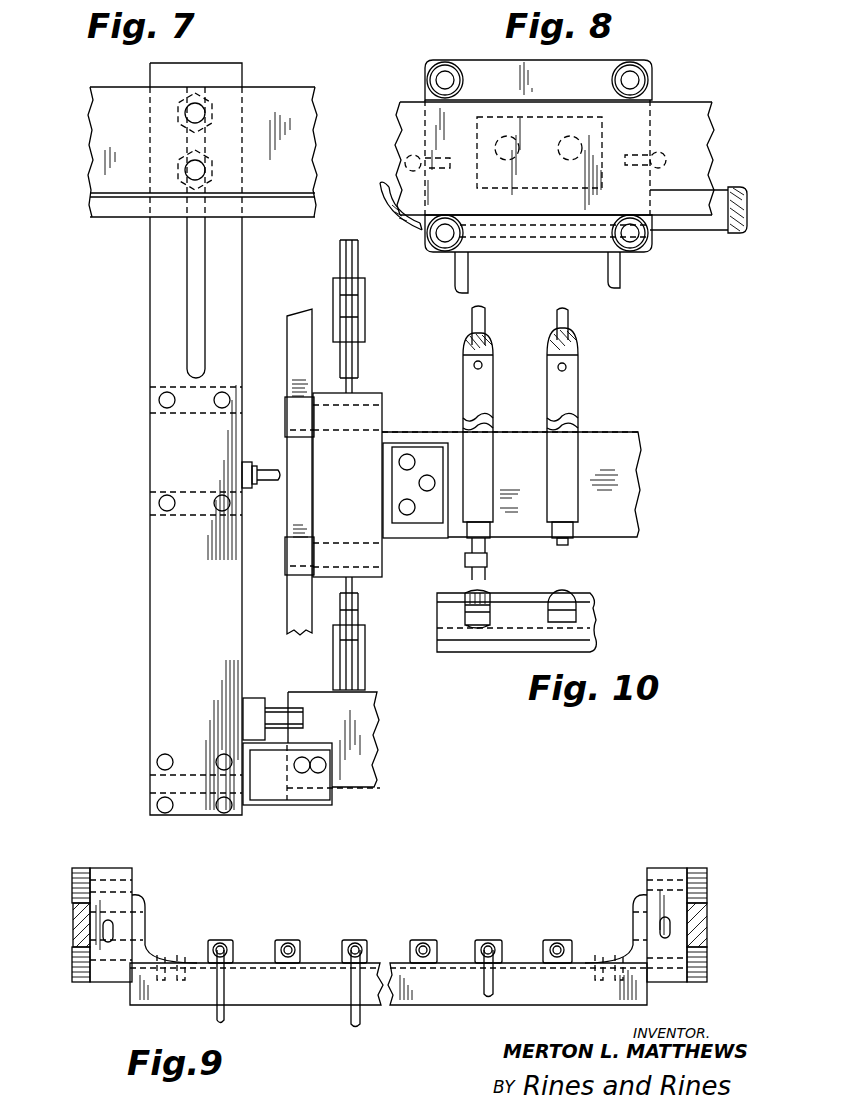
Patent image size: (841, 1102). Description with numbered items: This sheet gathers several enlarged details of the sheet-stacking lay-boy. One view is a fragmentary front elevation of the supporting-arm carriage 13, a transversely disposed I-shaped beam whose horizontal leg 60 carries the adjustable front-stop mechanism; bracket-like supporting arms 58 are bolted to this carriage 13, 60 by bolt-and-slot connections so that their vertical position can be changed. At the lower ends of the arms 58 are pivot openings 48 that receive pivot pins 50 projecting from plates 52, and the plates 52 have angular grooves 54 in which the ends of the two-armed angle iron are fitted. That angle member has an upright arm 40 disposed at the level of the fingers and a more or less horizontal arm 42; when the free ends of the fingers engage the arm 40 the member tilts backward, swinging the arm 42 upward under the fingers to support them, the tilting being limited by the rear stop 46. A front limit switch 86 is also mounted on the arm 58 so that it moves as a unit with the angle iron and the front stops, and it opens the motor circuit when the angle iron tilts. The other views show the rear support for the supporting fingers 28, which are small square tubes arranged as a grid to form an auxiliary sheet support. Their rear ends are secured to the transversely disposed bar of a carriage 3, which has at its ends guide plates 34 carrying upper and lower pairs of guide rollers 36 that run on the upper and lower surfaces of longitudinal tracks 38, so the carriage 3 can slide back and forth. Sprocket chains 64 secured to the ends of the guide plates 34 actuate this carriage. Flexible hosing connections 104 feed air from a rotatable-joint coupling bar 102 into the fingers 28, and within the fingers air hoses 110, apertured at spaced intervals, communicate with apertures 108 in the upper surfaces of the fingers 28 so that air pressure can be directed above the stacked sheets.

In FIG. 10, the carriage 3 is at (627, 518).
In FIG. 8, the carriage 3 is at (616, 273).
In FIG. 9, the carriage 3 is at (448, 988).
In FIG. 7, the supporting-arm carriage 13 is at (110, 135).
In FIG. 10, the supporting fingers 28 is at (557, 385).
In FIG. 8, the supporting fingers 28 is at (706, 228).
In FIG. 9, the supporting fingers 28 is at (357, 937).
In FIG. 8, the guide plates 34 is at (560, 83).
In FIG. 9, the guide plates 34 is at (118, 930).
In FIG. 7, the guide rollers 36 is at (297, 548).
In FIG. 8, the guide rollers 36 is at (453, 55).
In FIG. 9, the guide rollers 36 is at (80, 875).
In FIG. 7, the tracks 38 is at (297, 325).
In FIG. 8, the tracks 38 is at (690, 117).
In FIG. 9, the tracks 38 is at (75, 925).
In FIG. 7, the upper arm of angle member 40 is at (362, 743).
In FIG. 7, the horizontal arm of angle member 42 is at (360, 787).
In FIG. 7, the rear stop 46 is at (272, 708).
In FIG. 7, the pivot openings 48 is at (160, 797).
In FIG. 7, the pivot pins 50 is at (155, 785).
In FIG. 7, the plates 52 is at (272, 795).
In FIG. 7, the angular grooves 54 is at (312, 795).
In FIG. 7, the supporting arms 58 is at (158, 371).
In FIG. 7, the horizontal leg of I-beam 60 is at (105, 217).
In FIG. 7, the sprocket chains 64 is at (366, 335).
In FIG. 7, the front limit switch 86 is at (236, 473).
In FIG. 10, the rotatable-joint coupling bar 102 is at (450, 624).
In FIG. 10, the flexible hosing connections 104 is at (490, 592).
In FIG. 8, the flexible hosing connections 104 is at (390, 207).
In FIG. 9, the flexible hosing connections 104 is at (226, 1020).
In FIG. 10, the apertures 108 is at (573, 366).
In FIG. 10, the air hoses 110 is at (485, 331).
In FIG. 8, the air hoses 110 is at (750, 235).